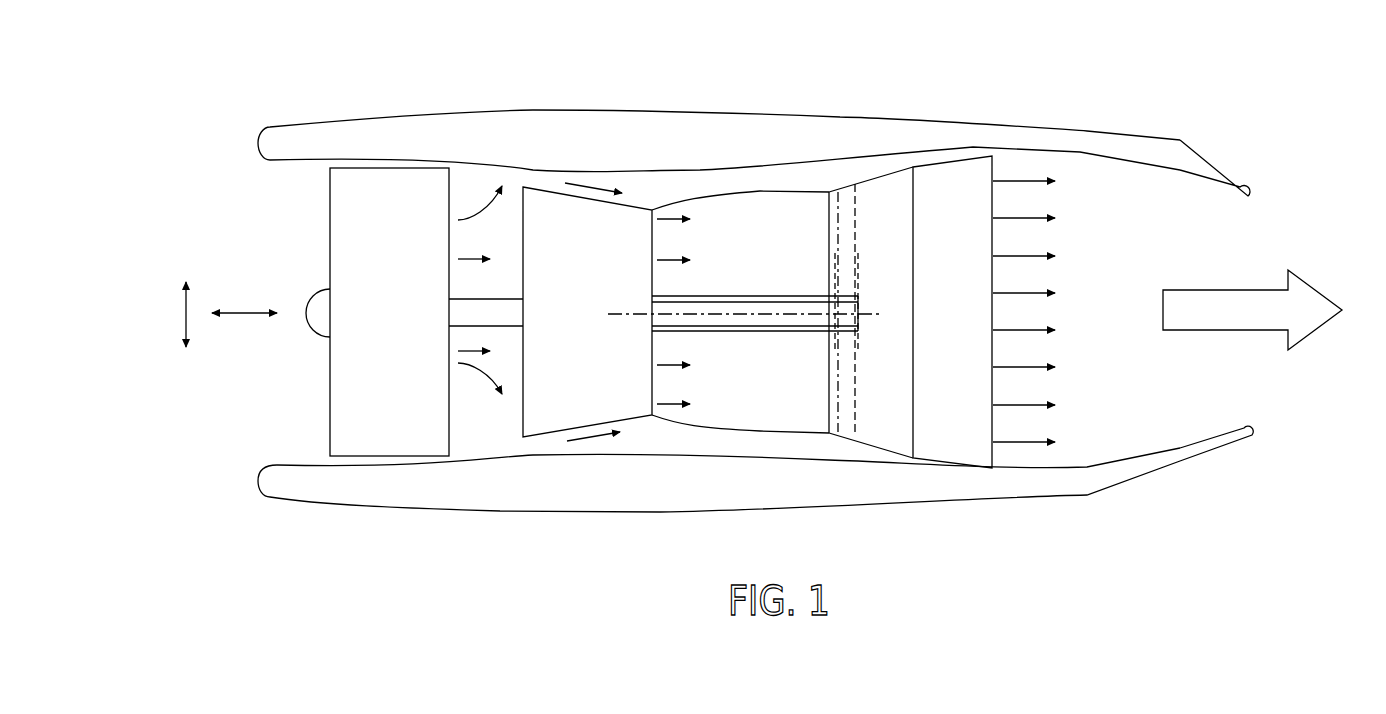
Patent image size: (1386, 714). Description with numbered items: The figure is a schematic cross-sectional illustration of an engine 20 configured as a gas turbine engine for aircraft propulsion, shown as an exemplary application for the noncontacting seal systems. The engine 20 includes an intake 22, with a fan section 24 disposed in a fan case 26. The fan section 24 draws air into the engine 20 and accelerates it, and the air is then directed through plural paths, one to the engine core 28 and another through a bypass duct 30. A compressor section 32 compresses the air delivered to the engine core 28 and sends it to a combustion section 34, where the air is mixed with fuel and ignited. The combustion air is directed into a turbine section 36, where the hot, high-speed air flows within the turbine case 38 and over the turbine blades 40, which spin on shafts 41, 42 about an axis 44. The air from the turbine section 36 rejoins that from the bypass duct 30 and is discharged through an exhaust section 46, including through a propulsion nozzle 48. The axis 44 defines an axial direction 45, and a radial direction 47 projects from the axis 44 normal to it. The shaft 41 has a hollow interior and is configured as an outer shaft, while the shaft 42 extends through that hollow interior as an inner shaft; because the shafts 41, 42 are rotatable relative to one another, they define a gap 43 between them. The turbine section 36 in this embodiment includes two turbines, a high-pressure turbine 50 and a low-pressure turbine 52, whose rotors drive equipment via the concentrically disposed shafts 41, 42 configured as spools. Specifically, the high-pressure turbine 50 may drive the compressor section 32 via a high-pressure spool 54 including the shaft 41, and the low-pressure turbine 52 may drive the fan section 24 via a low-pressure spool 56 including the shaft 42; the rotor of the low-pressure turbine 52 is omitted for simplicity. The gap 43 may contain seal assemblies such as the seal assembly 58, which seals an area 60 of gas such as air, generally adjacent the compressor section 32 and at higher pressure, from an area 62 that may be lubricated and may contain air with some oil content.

The engine 20 is at (990, 105).
The intake 22 is at (260, 213).
The fan section 24 is at (372, 425).
The fan case 26 is at (310, 127).
The engine core 28 is at (636, 199).
The bypass duct 30 is at (545, 175).
The compressor section 32 is at (575, 248).
The combustion section 34 is at (728, 278).
The turbine section 36 is at (900, 148).
The turbine case 38 is at (923, 162).
The turbine blades 40 is at (858, 398).
The shaft 41 is at (780, 296).
The shaft 42 is at (780, 332).
The gap 43 is at (757, 333).
The axis 44 is at (621, 315).
The axial direction 45 is at (245, 312).
The exhaust section 46 is at (1093, 217).
The radial direction 47 is at (185, 312).
The propulsion nozzle 48 is at (1243, 185).
The high-pressure turbine 50 is at (873, 392).
The low-pressure turbine 52 is at (938, 235).
The high-pressure spool 54 is at (723, 333).
The low-pressure spool 56 is at (523, 300).
The seal assembly 58 is at (866, 178).
The area 60 is at (650, 299).
The area 62 is at (660, 300).